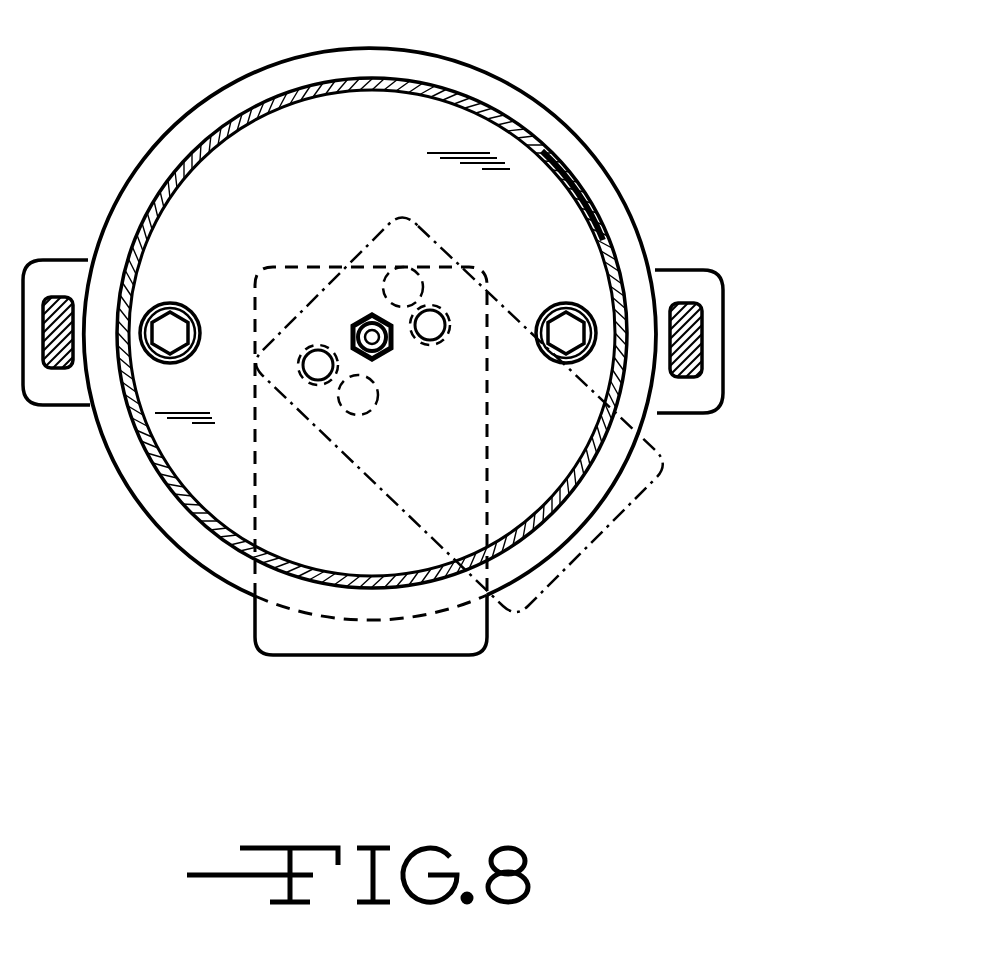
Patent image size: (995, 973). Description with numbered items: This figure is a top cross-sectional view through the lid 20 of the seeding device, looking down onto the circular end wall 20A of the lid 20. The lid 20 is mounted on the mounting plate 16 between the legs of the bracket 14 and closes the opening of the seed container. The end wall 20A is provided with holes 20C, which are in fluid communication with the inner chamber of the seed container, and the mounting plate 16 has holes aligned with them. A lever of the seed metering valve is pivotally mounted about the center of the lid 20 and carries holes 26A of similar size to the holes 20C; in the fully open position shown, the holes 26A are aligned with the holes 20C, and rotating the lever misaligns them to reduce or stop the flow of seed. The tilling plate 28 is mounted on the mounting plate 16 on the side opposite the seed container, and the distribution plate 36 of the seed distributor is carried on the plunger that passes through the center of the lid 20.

The bracket 14 is at (697, 329).
The mounting plate 16 is at (702, 400).
The lid 20 is at (572, 182).
The end wall 20A is at (423, 118).
The holes 20C is at (313, 370).
The holes 26A is at (405, 262).
The tilling plate 28 is at (192, 128).
The distribution plate 36 is at (417, 647).